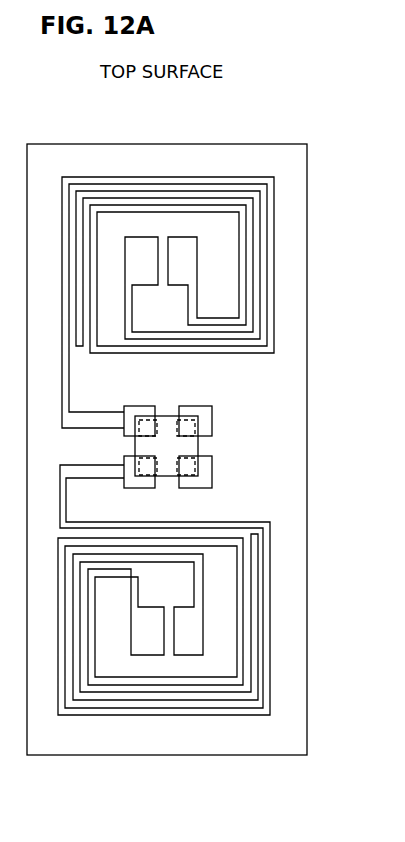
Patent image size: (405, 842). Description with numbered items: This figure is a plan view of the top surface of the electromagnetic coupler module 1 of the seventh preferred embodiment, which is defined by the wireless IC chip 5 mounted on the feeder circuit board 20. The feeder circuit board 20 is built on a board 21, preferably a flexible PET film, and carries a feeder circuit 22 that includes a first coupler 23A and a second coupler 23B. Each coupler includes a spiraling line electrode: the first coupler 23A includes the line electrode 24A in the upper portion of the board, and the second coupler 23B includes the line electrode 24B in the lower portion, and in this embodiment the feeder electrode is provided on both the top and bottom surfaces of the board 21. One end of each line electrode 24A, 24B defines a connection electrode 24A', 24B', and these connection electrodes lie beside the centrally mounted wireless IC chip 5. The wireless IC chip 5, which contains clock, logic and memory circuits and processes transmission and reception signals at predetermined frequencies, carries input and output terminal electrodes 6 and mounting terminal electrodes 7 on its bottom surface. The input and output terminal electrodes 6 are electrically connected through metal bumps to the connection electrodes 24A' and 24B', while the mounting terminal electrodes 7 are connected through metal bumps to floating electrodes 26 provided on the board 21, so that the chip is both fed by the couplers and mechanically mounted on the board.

The electromagnetic coupler module 1 is at (319, 112).
The wireless IC chip 5 is at (199, 444).
The input and output terminal electrodes 6 is at (149, 421).
The mounting terminal electrodes 7 is at (198, 427).
The feeder circuit board 20 is at (312, 199).
The board 21 is at (308, 381).
The feeder circuit 22 is at (281, 584).
The first coupler 23A is at (203, 191).
The second coupler 23B is at (199, 701).
The line electrode 24A is at (224, 259).
The line electrode 24B is at (221, 652).
The connection electrode 24A' is at (117, 399).
The connection electrode 24B' is at (117, 488).
The floating electrodes 26 is at (195, 416).